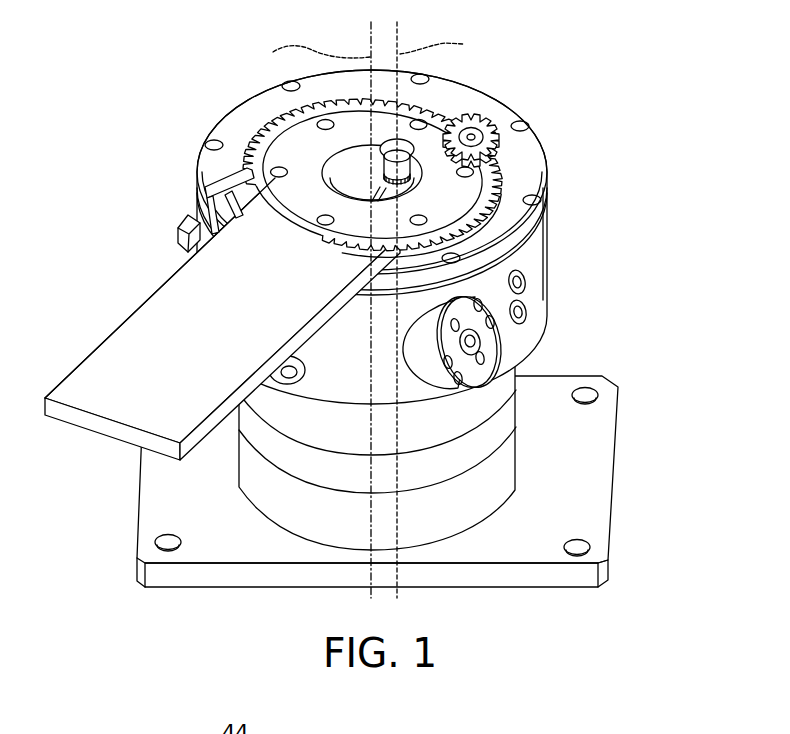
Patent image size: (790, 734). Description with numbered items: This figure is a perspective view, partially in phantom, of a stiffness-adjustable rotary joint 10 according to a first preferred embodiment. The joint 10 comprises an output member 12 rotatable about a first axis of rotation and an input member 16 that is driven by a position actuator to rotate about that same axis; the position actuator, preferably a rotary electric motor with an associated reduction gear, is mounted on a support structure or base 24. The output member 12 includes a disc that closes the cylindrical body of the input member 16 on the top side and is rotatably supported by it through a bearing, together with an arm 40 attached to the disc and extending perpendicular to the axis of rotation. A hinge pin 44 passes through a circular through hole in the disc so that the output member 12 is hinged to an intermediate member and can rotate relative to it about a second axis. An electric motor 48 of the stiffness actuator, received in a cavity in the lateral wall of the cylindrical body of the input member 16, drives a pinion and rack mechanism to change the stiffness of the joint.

The stiffness-adjustable rotary joint 10 is at (363, 310).
The output member 12 is at (432, 150).
The input member 16 is at (540, 328).
The support structure or base 24 is at (510, 467).
The arm 40 is at (130, 352).
The hinge pin 44 is at (417, 158).
The electric motor 48 is at (474, 388).